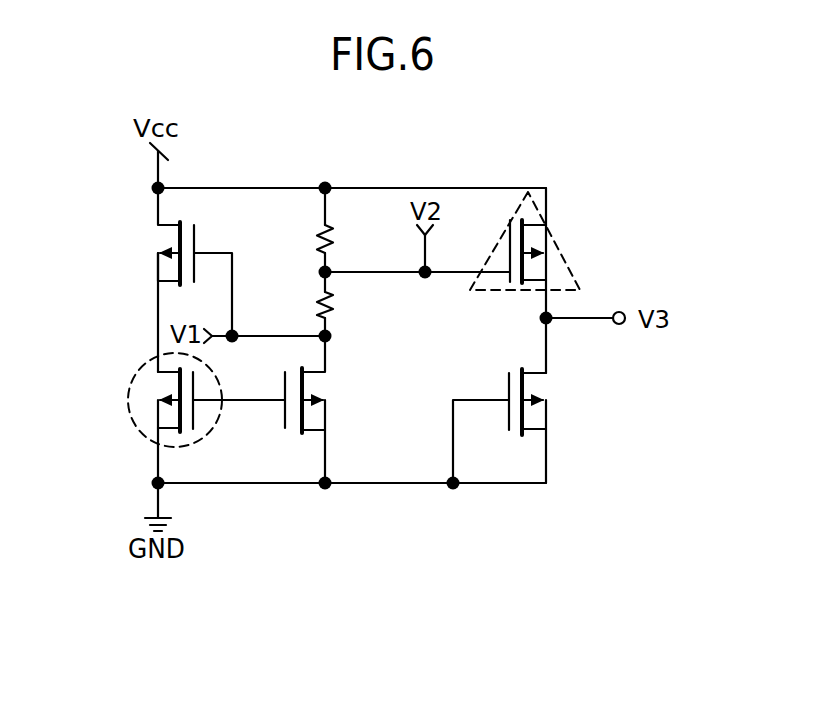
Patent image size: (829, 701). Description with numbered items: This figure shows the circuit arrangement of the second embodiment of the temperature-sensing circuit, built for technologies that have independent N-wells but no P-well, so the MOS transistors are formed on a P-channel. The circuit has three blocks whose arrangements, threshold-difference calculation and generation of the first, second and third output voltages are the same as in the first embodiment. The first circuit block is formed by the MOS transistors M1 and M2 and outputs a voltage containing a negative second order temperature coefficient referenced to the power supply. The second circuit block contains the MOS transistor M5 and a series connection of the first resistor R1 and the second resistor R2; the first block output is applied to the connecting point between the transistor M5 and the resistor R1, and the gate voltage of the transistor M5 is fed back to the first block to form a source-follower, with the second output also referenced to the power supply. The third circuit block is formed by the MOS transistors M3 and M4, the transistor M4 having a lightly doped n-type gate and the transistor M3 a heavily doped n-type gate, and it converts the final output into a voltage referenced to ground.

The MOS transistor M1 is at (158, 244).
The MOS transistor M2 is at (157, 388).
The MOS transistor M3 is at (555, 240).
The MOS transistor M4 is at (548, 410).
The MOS transistor M5 is at (318, 412).
The first resistor R1 is at (340, 240).
The second resistor R2 is at (340, 304).